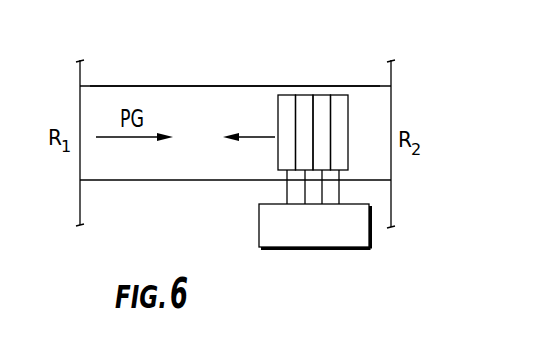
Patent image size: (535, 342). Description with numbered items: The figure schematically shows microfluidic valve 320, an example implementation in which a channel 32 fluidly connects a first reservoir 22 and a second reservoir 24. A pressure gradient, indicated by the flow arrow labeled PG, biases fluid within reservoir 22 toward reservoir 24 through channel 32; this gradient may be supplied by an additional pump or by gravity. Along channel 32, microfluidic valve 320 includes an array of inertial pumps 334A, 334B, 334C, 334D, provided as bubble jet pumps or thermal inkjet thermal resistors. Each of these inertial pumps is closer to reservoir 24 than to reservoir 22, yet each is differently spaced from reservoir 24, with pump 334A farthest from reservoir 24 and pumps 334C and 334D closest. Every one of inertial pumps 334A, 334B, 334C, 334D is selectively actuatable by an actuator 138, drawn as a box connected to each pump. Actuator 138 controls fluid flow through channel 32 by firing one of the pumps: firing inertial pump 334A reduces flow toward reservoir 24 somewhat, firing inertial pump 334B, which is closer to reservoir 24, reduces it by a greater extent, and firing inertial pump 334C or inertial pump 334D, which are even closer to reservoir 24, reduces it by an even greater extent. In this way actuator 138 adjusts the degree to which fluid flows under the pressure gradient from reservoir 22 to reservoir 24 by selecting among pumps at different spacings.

The reservoir 22 is at (68, 98).
The reservoir 24 is at (402, 167).
The channel 32 is at (173, 86).
The microfluidic valve 320 is at (151, 60).
The inertial pump 334A is at (283, 95).
The inertial pump 334B is at (302, 95).
The inertial pump 334C is at (320, 95).
The inertial pump 334D is at (340, 95).
The actuator 138 is at (297, 247).